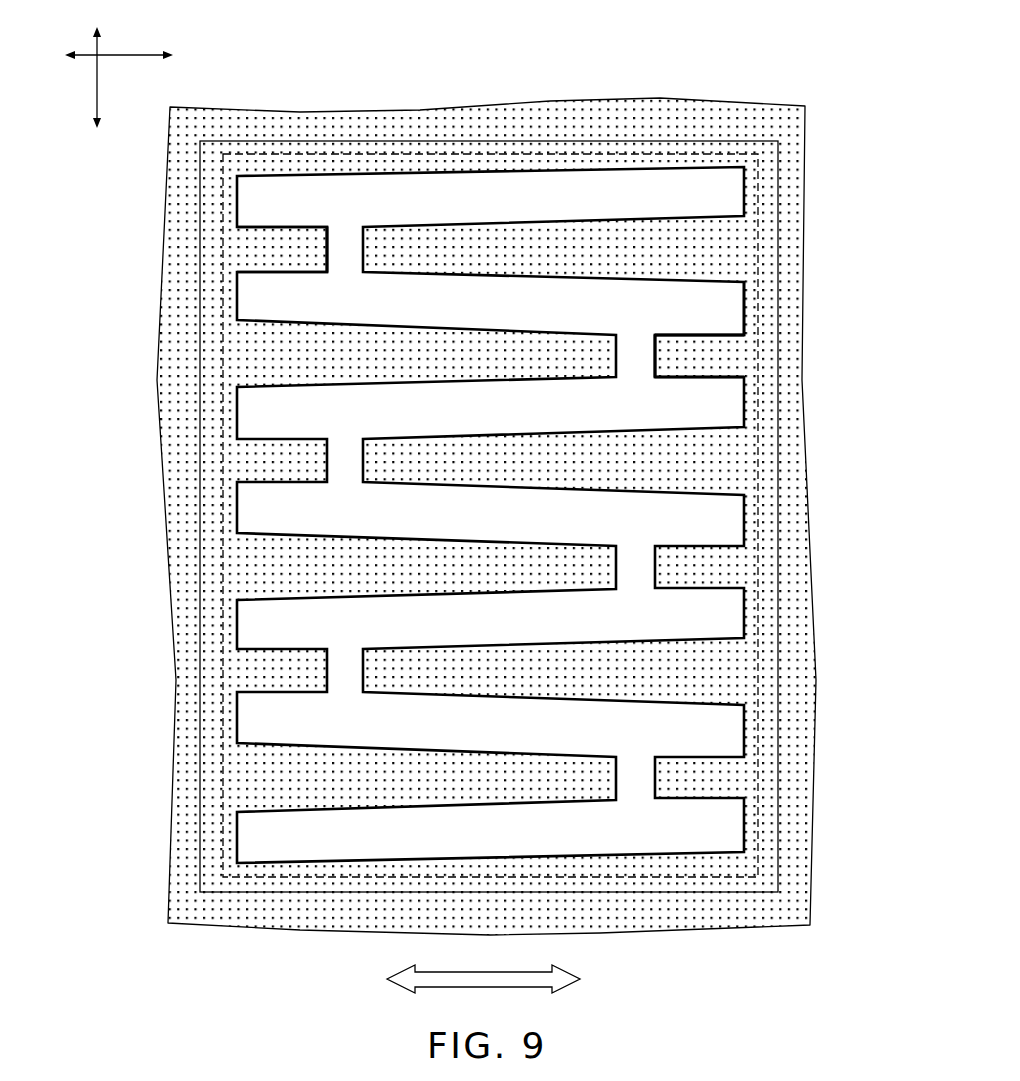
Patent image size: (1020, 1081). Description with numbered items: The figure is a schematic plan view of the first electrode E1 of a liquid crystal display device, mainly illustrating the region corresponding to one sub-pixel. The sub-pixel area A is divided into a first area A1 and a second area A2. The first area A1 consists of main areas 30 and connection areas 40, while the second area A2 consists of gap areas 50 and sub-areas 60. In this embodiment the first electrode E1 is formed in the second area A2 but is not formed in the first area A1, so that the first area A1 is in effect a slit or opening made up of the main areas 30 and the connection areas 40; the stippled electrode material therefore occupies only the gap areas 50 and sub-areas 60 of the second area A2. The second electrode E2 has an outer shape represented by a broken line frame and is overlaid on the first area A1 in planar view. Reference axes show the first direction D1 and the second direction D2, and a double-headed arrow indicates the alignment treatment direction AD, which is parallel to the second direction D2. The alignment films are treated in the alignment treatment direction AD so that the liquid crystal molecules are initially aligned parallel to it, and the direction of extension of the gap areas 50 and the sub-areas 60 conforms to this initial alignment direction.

The main areas 30 is at (453, 292).
The connection areas 40 is at (332, 244).
The gap areas 50 is at (553, 362).
The sub-areas 60 is at (290, 253).
The first electrode E1 is at (725, 100).
The second electrode E2 is at (220, 472).
The sub-pixel area A is at (780, 230).
The first area A1 is at (714, 313).
The second area A2 is at (741, 351).
The first direction D1 is at (84, 77).
The second direction D2 is at (119, 44).
The alignment treatment direction AD is at (483, 969).